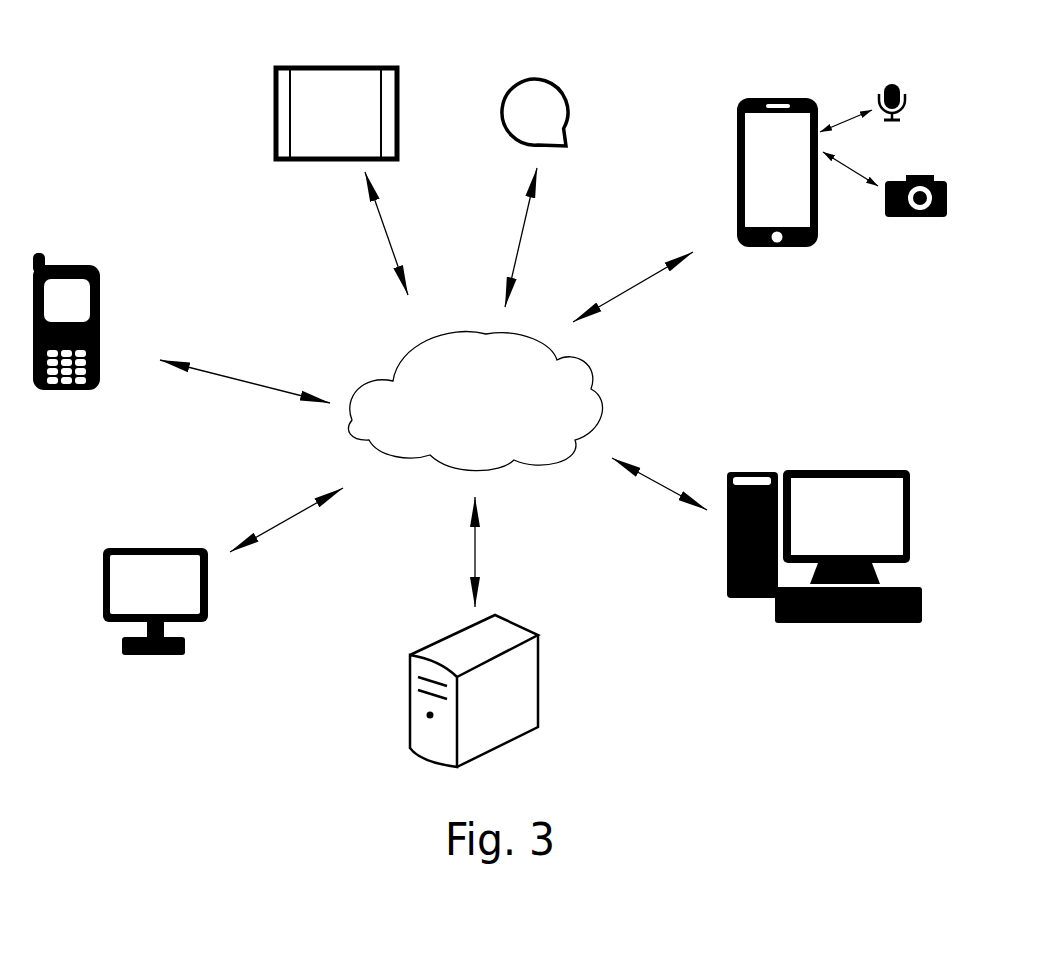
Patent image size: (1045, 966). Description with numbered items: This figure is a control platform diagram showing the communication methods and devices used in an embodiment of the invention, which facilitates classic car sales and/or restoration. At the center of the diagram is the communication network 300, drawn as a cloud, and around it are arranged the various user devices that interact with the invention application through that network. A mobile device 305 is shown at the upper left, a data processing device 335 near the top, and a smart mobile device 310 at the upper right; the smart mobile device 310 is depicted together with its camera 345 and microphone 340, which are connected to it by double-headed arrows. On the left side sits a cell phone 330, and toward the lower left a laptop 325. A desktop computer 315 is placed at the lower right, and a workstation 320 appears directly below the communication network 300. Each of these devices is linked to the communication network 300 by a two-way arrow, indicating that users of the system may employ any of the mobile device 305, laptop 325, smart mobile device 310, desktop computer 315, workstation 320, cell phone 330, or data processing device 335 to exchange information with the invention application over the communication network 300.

The communication network 300 is at (400, 353).
The mobile device 305 is at (262, 135).
The smart mobile device 310 is at (718, 188).
The desktop computer 315 is at (845, 452).
The workstation 320 is at (435, 625).
The laptop 325 is at (115, 545).
The cell phone 330 is at (88, 265).
The data processing device 335 is at (575, 107).
The microphone 340 is at (870, 76).
The camera 345 is at (932, 220).